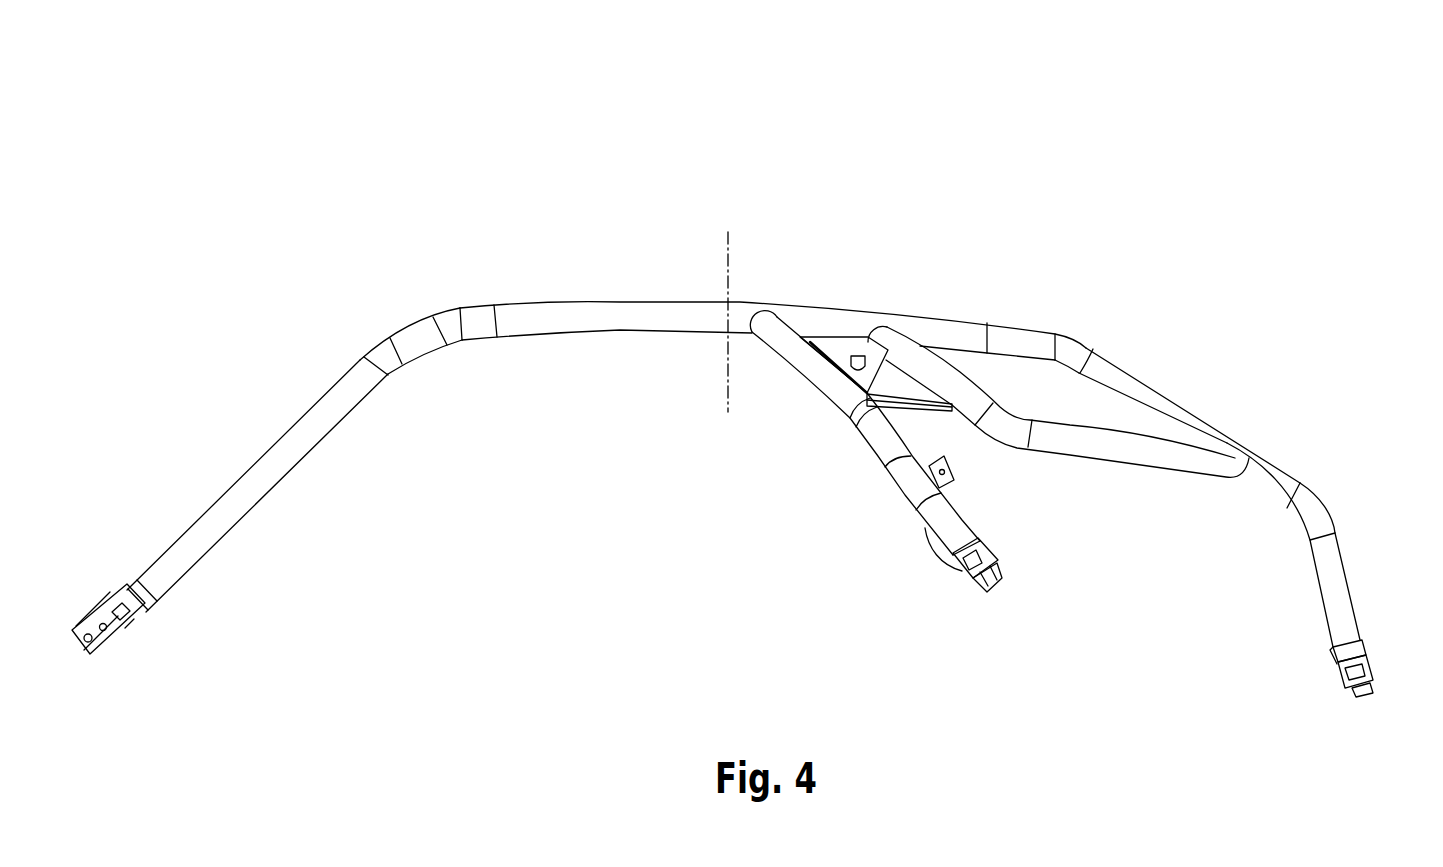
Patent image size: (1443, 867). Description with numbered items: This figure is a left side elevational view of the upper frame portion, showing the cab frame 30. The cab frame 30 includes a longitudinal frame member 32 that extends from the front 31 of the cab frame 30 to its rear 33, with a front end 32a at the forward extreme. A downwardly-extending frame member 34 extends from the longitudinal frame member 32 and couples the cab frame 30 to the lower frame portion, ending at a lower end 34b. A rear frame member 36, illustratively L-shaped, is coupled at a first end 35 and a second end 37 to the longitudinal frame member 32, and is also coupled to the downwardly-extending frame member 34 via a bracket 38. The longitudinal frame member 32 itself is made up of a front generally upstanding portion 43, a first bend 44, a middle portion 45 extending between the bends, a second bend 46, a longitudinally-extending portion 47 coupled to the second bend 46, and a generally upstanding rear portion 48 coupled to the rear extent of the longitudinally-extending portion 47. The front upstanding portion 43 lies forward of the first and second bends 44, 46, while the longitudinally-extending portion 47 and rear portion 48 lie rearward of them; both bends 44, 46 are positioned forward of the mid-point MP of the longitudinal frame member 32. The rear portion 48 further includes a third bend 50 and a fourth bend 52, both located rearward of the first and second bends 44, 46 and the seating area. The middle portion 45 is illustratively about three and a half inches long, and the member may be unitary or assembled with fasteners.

The cab frame 30 is at (1054, 166).
The front 31 is at (96, 478).
The longitudinal frame member 32 is at (677, 258).
The front end 32a is at (107, 660).
The rear 33 is at (1344, 486).
The downwardly-extending frame member 34 is at (858, 449).
The lower end 34b is at (996, 608).
The first end 35 is at (875, 332).
The rear frame member 36 is at (1135, 480).
The second end 37 is at (1221, 457).
The bracket 38 is at (907, 376).
The front generally upstanding portion 43 is at (263, 482).
The first bend 44 is at (373, 352).
The middle portion 45 is at (413, 338).
The second bend 46 is at (447, 318).
The longitudinally-extending portion 47 is at (557, 316).
The generally upstanding rear portion 48 is at (1115, 360).
The third bend 50 is at (1077, 350).
The fourth bend 52 is at (1308, 515).
The mid-point MP is at (725, 380).